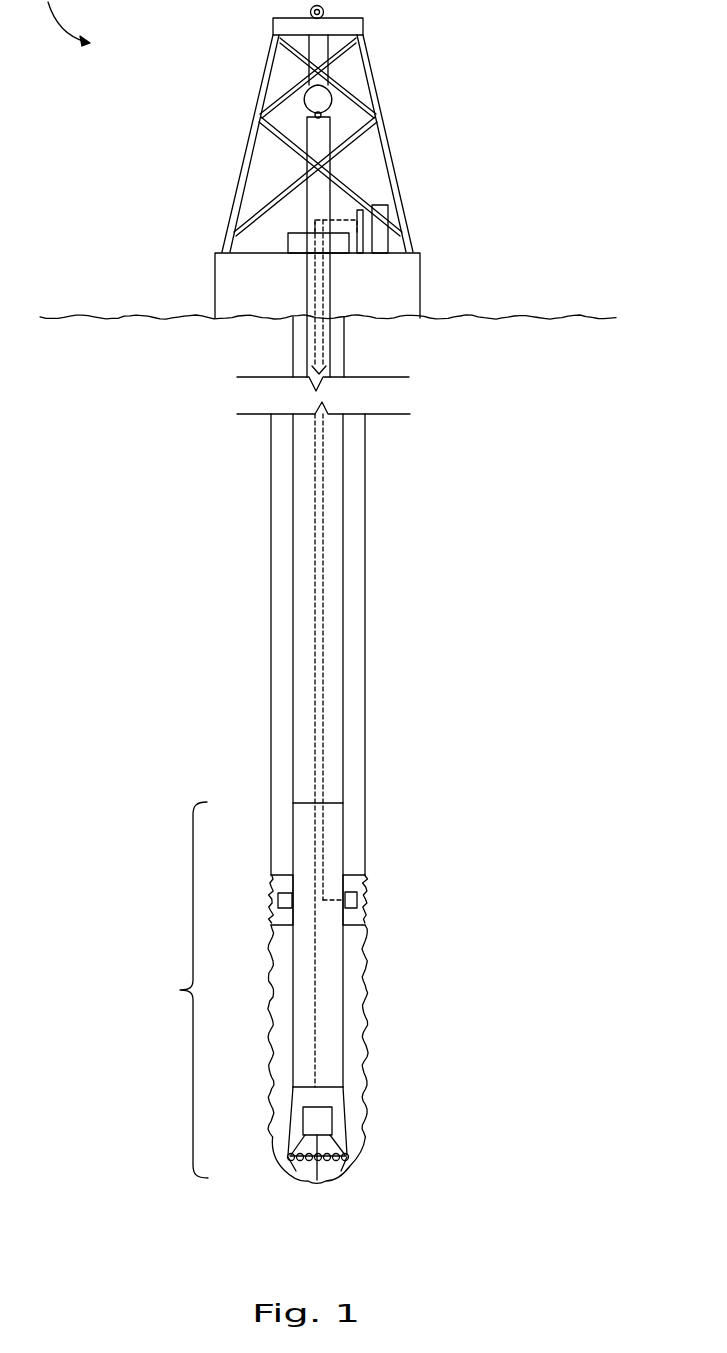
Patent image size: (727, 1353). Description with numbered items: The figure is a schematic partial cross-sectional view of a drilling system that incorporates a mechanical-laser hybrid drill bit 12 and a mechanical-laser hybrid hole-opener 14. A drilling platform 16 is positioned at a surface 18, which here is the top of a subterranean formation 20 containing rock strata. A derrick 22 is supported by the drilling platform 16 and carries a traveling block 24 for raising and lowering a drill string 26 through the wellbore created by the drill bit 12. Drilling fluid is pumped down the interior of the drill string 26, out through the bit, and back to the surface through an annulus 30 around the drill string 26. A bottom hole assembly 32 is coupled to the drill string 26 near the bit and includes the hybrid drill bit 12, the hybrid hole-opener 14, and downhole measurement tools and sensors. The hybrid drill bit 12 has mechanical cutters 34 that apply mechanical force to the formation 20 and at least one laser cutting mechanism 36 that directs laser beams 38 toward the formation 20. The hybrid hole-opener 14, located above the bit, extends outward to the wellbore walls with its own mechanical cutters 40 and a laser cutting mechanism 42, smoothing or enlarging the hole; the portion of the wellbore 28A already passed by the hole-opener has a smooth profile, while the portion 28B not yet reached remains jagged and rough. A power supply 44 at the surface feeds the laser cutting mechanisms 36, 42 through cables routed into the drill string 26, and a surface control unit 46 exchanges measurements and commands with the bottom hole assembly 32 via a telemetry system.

The mechanical-laser hybrid drill bit 12 is at (350, 1112).
The mechanical-laser hybrid hole-opener 14 is at (284, 861).
The drilling platform 16 is at (240, 255).
The surface 18 is at (538, 315).
The subterranean formation 20 is at (473, 460).
The derrick 22 is at (387, 125).
The traveling block 24 is at (330, 97).
The drill string 26 is at (307, 342).
The portion of the wellbore 28A is at (366, 618).
The portion of the wellbore 28B is at (366, 1003).
The annulus 30 is at (353, 758).
The bottom hole assembly 32 is at (176, 990).
The mechanical cutters 34 is at (288, 1155).
The laser cutting mechanism 36 is at (332, 1120).
The laser beams 38 is at (320, 1168).
The mechanical cutters 40 is at (273, 905).
The laser cutting mechanism 42 is at (353, 900).
The power supply 44 is at (365, 238).
The surface control unit 46 is at (390, 212).